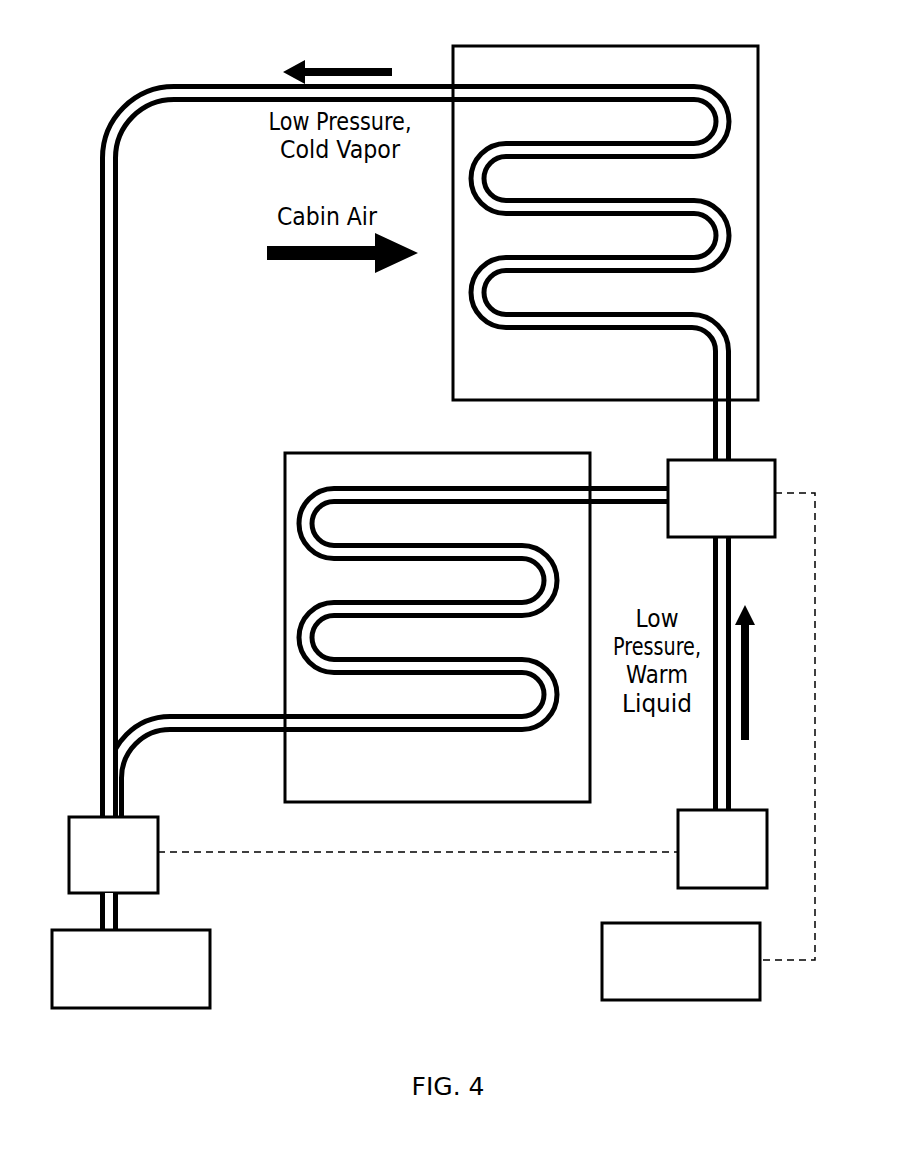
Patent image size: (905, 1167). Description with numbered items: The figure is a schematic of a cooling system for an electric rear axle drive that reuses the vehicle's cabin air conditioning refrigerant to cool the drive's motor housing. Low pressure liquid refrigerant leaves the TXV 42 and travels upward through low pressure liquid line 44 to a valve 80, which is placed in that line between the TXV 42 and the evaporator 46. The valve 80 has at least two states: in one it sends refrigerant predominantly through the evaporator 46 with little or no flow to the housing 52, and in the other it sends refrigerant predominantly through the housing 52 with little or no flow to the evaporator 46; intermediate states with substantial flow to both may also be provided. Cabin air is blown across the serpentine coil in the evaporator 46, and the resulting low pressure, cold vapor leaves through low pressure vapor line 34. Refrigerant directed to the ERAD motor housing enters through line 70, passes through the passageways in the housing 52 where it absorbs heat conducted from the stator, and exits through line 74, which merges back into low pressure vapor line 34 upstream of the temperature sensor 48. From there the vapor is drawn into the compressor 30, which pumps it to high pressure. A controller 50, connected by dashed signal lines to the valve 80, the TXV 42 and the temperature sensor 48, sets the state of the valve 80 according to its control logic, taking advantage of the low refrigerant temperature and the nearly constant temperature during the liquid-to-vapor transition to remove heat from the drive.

The compressor 30 is at (210, 968).
The low pressure vapor line 34 is at (122, 190).
The TXV 42 is at (678, 865).
The low pressure liquid line 44 is at (713, 735).
The evaporator 46 is at (451, 348).
The temperature sensor 48 is at (158, 873).
The controller 50 is at (602, 962).
The housing 52 is at (337, 453).
The line 70 is at (618, 483).
The line 74 is at (197, 715).
The valve 80 is at (747, 537).